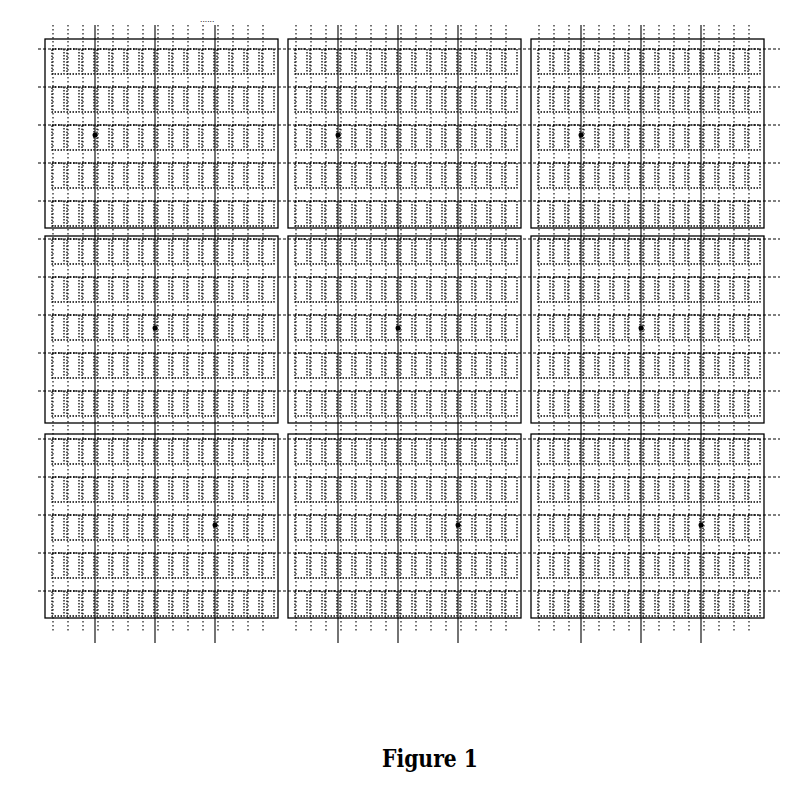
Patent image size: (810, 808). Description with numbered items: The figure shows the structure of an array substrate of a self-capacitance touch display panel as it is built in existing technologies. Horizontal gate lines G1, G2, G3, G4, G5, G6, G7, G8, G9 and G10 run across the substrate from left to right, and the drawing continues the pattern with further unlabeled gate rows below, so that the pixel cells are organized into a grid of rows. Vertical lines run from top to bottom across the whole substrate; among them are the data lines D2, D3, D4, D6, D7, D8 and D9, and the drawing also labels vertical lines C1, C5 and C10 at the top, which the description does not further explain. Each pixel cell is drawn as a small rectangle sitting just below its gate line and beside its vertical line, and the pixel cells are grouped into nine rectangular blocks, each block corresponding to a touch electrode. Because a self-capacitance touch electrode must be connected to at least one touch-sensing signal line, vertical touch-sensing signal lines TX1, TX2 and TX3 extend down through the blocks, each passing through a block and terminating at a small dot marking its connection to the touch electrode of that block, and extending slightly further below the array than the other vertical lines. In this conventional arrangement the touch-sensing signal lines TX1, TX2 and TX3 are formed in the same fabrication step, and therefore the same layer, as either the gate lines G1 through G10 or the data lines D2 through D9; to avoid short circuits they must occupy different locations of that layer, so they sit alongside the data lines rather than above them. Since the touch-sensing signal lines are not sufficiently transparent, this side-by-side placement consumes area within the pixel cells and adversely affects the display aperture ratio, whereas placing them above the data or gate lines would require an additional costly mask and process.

The gate line G1 is at (398, 49).
The gate line G2 is at (398, 87).
The gate line G3 is at (398, 125).
The gate line G4 is at (398, 163).
The gate line G5 is at (398, 201).
The gate line G6 is at (398, 239).
The gate line G7 is at (398, 277).
The gate line G8 is at (398, 315).
The gate line G9 is at (398, 353).
The gate line G10 is at (396, 391).
The touch-sensing signal line TX1 is at (93, 341).
The touch-sensing signal line TX2 is at (153, 341).
The touch-sensing signal line TX3 is at (213, 341).
The common line C1 is at (51, 19).
The data line D2 is at (67, 19).
The data line D3 is at (84, 19).
The data line D4 is at (98, 19).
The common line C5 is at (112, 19).
The data line D6 is at (127, 19).
The data line D7 is at (144, 19).
The data line D8 is at (158, 19).
The data line D9 is at (172, 19).
The common line C10 is at (188, 19).